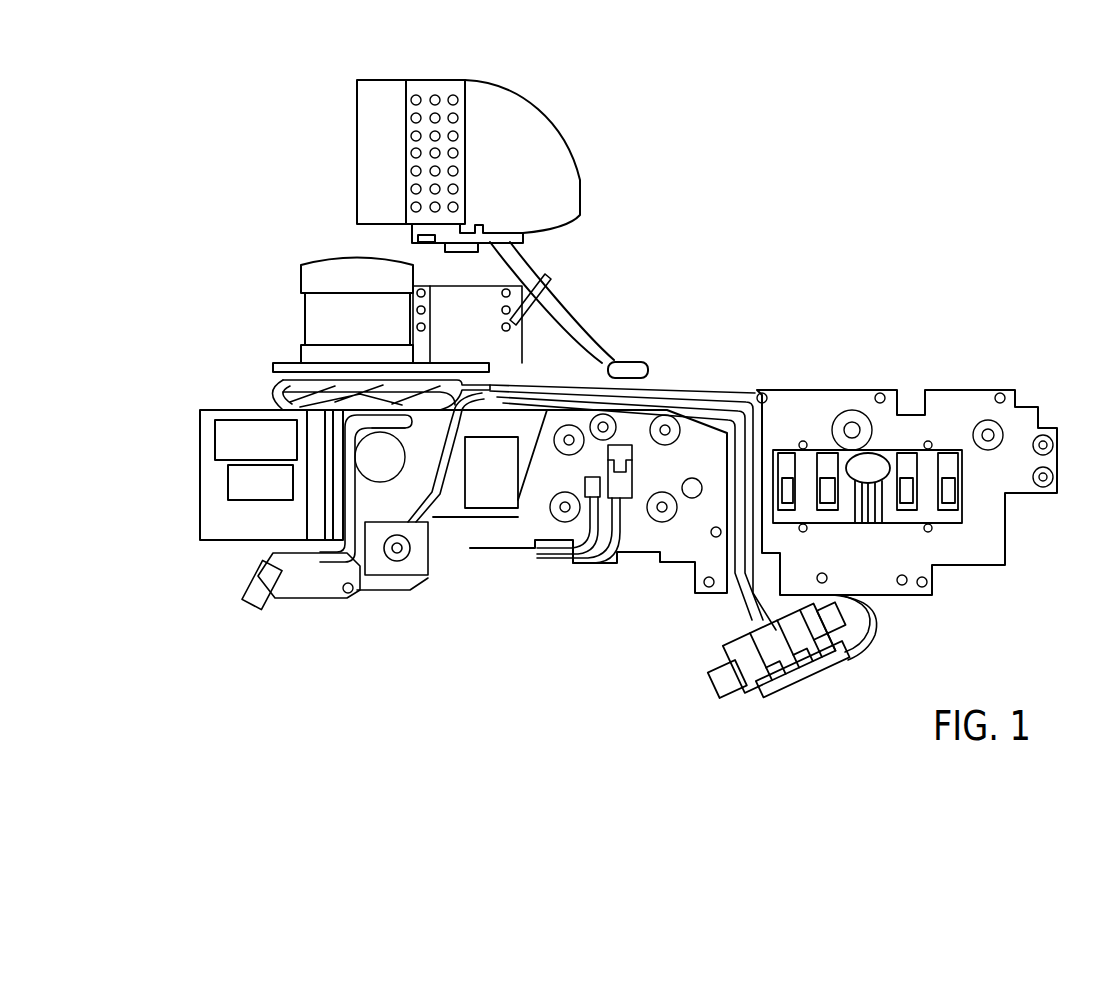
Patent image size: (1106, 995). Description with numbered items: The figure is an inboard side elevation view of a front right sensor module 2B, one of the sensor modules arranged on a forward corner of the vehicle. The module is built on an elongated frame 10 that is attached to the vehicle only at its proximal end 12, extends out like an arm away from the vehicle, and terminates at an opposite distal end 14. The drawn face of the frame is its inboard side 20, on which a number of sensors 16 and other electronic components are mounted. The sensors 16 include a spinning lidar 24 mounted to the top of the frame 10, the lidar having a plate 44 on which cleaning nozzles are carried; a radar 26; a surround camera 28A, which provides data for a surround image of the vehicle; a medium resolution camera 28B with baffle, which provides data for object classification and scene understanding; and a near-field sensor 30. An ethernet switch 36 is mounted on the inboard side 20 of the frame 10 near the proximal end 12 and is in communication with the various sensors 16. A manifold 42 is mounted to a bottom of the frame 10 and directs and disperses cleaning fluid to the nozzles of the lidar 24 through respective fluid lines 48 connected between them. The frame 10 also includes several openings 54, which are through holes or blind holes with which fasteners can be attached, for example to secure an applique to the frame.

The front right sensor module 2B is at (862, 231).
The frame 10 is at (650, 543).
The proximal end 12 is at (1011, 592).
The distal end 14 is at (237, 384).
The sensors 16 is at (366, 446).
The inboard side 20 is at (465, 537).
The lidar 24 is at (309, 308).
The radar 26 is at (208, 487).
The surround camera 28A is at (258, 582).
The medium resolution camera 28B is at (377, 572).
The near-field sensor 30 is at (495, 560).
The ethernet switch 36 is at (903, 453).
The manifold 42 is at (845, 670).
The plate 44 is at (275, 366).
The fluid lines 48 is at (688, 404).
The openings 54 is at (348, 593).